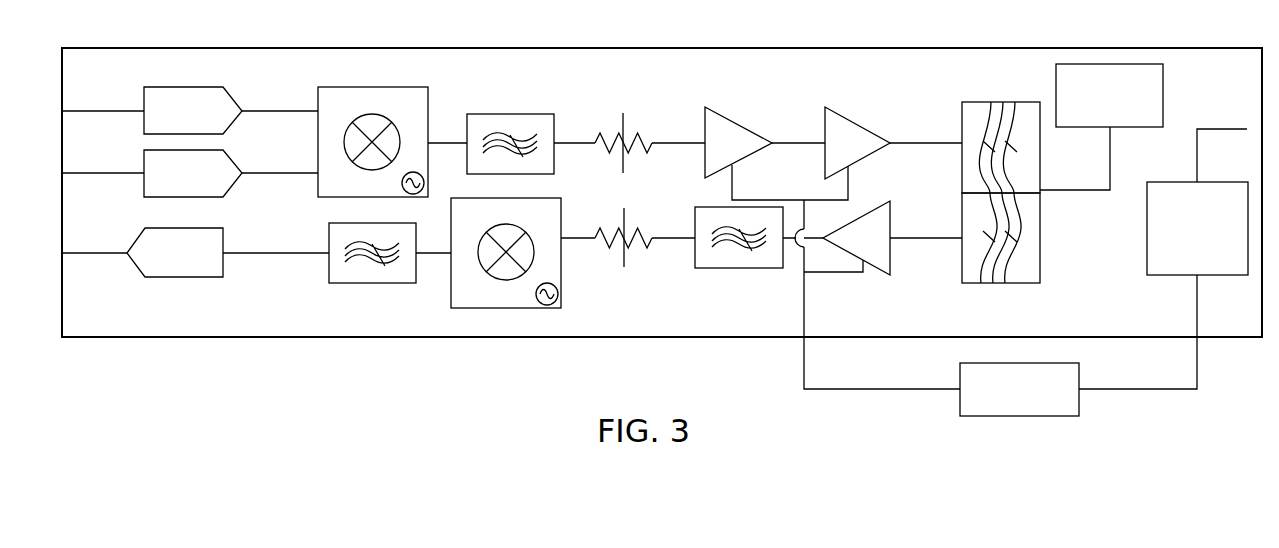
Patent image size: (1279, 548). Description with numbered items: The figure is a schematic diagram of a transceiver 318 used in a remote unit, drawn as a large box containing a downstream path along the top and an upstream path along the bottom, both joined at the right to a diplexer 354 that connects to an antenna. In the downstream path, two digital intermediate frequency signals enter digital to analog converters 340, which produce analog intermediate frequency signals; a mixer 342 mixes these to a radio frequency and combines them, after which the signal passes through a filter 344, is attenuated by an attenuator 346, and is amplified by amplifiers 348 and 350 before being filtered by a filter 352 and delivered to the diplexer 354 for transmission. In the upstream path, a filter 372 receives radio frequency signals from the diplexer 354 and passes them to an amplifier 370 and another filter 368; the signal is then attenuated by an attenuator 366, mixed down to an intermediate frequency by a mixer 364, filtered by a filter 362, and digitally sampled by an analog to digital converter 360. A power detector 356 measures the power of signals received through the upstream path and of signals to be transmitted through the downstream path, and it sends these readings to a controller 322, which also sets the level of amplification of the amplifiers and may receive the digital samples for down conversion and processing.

The transceiver 318 is at (739, 82).
The controller 322 is at (1020, 417).
The digital to analog converters 340 is at (223, 88).
The mixer 342 is at (372, 87).
The filter 344 is at (509, 114).
The attenuator 346 is at (624, 160).
The amplifier 348 is at (742, 125).
The amplifier 350 is at (857, 122).
The filter 352 is at (962, 176).
The diplexer 354 is at (1165, 95).
The power detector 356 is at (1166, 275).
The analog to digital converter 360 is at (185, 277).
The filter 362 is at (373, 284).
The mixer 364 is at (507, 308).
The attenuator 366 is at (624, 265).
The filter 368 is at (739, 269).
The amplifier 370 is at (883, 273).
The filter 372 is at (1042, 242).